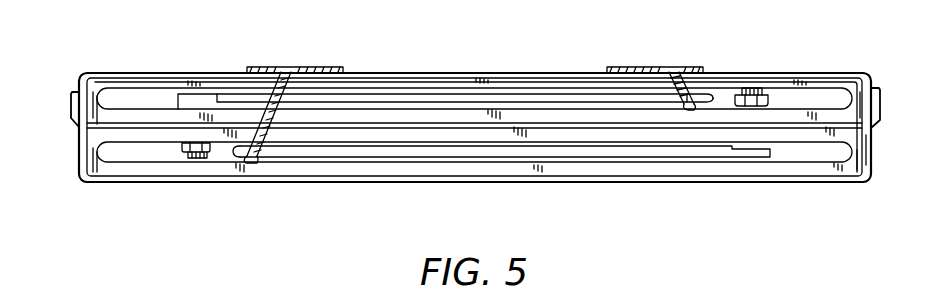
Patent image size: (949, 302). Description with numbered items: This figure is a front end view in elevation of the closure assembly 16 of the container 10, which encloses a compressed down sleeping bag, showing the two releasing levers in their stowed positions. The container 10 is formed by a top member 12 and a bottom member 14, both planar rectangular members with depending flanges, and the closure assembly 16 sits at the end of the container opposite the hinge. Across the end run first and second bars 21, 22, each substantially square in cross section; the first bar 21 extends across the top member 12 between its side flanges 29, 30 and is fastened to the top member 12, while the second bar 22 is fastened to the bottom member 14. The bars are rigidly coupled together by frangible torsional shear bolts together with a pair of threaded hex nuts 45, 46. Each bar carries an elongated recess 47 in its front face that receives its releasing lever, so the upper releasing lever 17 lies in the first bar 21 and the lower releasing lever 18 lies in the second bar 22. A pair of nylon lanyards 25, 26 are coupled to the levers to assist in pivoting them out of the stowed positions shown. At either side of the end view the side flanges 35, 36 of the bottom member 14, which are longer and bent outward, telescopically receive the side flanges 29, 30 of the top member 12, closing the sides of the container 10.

The container 10 is at (783, 51).
The top member 12 is at (460, 71).
The bottom member 14 is at (466, 183).
The closure assembly 16 is at (150, 96).
The upper releasing lever 17 is at (576, 93).
The lower releasing lever 18 is at (584, 157).
The first bar 21 is at (853, 73).
The second bar 22 is at (838, 178).
The nylon lanyard 25 is at (691, 67).
The nylon lanyard 26 is at (330, 68).
The side flange 29 is at (878, 88).
The side flange 30 is at (82, 120).
The side flange 35 is at (875, 152).
The side flange 36 is at (79, 154).
The threaded hex nut 45 is at (762, 94).
The threaded hex nut 46 is at (183, 152).
The elongated recess 47 is at (818, 89).